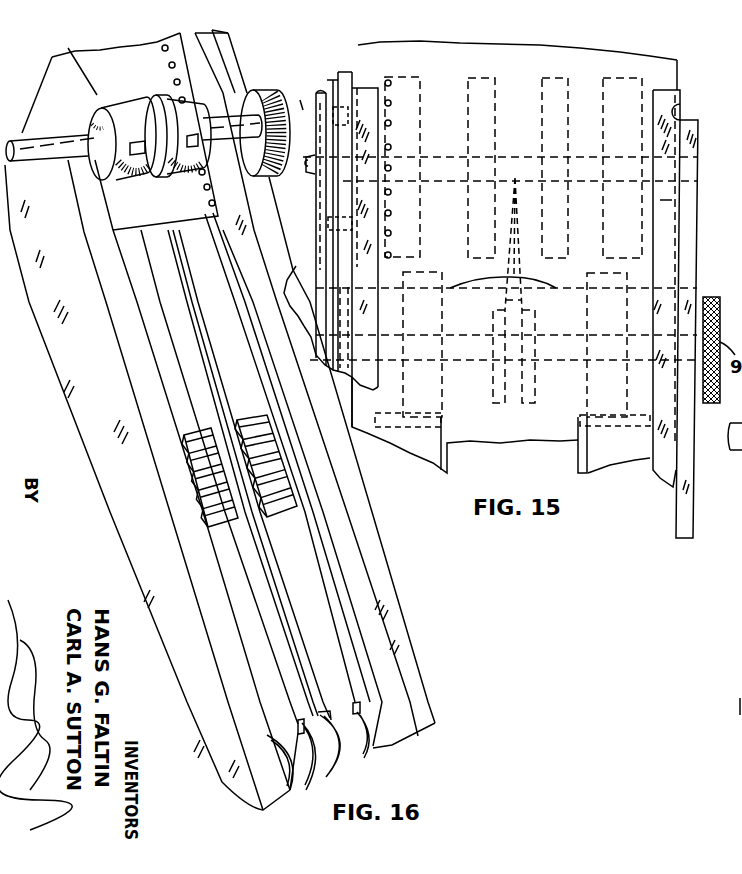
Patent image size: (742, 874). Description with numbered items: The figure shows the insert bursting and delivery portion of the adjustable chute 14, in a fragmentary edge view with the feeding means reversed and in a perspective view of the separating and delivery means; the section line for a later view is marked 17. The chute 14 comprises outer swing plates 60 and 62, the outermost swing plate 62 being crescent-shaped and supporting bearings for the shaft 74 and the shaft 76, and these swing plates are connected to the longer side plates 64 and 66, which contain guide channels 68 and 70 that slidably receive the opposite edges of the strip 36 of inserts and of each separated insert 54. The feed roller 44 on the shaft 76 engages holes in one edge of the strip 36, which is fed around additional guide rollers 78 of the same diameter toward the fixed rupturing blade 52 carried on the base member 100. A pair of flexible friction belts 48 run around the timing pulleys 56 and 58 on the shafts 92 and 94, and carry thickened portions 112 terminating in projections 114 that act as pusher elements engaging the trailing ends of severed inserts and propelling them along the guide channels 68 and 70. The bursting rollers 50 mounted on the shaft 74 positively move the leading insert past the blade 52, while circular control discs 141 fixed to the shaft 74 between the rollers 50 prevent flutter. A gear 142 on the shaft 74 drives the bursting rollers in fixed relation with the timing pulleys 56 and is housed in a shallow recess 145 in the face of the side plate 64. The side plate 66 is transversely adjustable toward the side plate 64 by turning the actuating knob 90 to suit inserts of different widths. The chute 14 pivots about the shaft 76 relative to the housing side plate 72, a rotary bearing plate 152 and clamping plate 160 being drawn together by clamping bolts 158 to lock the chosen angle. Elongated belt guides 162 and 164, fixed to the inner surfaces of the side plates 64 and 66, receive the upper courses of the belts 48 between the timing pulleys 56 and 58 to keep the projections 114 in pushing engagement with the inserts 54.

In FIG. 16, the adjustable chute 14 is at (403, 625).
In FIG. 15, the section line 17 is at (332, 50).
In FIG. 16, the strip of inserts 36 is at (77, 63).
In FIG. 15, the strip of inserts 36 is at (567, 58).
In FIG. 15, the feed roller 44 is at (417, 78).
In FIG. 16, the flexible friction belts 48 is at (252, 627).
In FIG. 16, the bursting rollers 50 is at (173, 95).
In FIG. 15, the rupturing blade 52 is at (518, 295).
In FIG. 15, the separated insert 54 is at (483, 435).
In FIG. 15, the timing pulleys 56 is at (440, 395).
In FIG. 16, the timing pulleys 58 is at (292, 792).
In FIG. 15, the swing plate 60 is at (340, 72).
In FIG. 16, the outer swing plate 62 is at (233, 63).
In FIG. 15, the outer swing plate 62 is at (700, 133).
In FIG. 16, the side plate 64 is at (153, 570).
In FIG. 15, the side plate 64 is at (391, 102).
In FIG. 16, the side plate 66 is at (378, 560).
In FIG. 15, the side plate 66 is at (667, 210).
In FIG. 15, the guide channel 68 is at (320, 223).
In FIG. 15, the guide channel 70 is at (681, 103).
In FIG. 16, the side plate of housing 72 is at (318, 325).
In FIG. 15, the side plate of housing 72 is at (735, 458).
In FIG. 16, the shaft 74 is at (23, 137).
In FIG. 15, the shaft 76 is at (447, 153).
In FIG. 15, the guide rollers 78 is at (497, 97).
In FIG. 15, the actuating knob 90 is at (741, 760).
In FIG. 15, the shaft 92 is at (457, 338).
In FIG. 16, the shaft 94 is at (330, 762).
In FIG. 15, the base member 100 is at (530, 385).
In FIG. 16, the thickened portions 112 is at (207, 490).
In FIG. 16, the projections 114 is at (185, 440).
In FIG. 16, the control discs 141 is at (147, 93).
In FIG. 15, the gear 142 is at (369, 402).
In FIG. 15, the shallow recess 145 is at (377, 310).
In FIG. 15, the rotary bearing plate 152 is at (323, 183).
In FIG. 15, the clamping bolts 158 is at (342, 103).
In FIG. 15, the clamping plate 160 is at (322, 132).
In FIG. 16, the belt guide 162 is at (330, 557).
In FIG. 16, the belt guide 164 is at (197, 342).